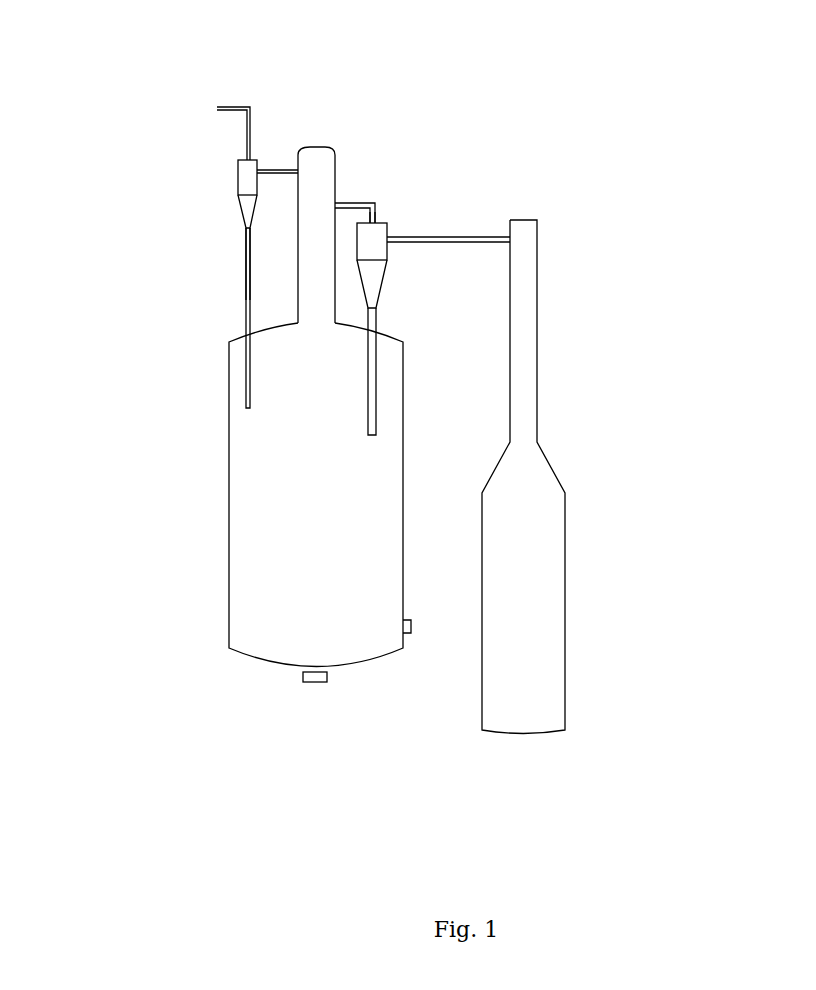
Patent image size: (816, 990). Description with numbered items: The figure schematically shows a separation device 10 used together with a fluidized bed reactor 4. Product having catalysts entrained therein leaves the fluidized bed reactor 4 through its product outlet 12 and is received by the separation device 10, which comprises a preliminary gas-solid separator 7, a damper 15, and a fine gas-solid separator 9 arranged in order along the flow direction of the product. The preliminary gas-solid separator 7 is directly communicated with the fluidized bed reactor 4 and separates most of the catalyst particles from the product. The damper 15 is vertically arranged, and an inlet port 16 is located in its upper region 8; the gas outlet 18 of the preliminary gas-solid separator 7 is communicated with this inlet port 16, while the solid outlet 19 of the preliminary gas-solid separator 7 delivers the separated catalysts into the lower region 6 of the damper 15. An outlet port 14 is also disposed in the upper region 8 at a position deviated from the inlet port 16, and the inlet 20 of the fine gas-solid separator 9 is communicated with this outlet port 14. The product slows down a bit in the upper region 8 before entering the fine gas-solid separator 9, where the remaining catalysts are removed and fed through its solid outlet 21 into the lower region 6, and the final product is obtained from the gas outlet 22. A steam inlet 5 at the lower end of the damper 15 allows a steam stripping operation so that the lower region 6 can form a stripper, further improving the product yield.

The fluidized bed reactor 4 is at (527, 525).
The steam inlet 5 is at (308, 682).
The lower region 6 is at (288, 513).
The preliminary gas-solid separator 7 is at (375, 243).
The upper region 8 is at (322, 182).
The fine gas-solid separator 9 is at (250, 178).
The separation device 10 is at (386, 123).
The product outlet 12 is at (510, 233).
The outlet port 14 is at (297, 152).
The damper 15 is at (212, 602).
The inlet port 16 is at (335, 203).
The gas outlet 18 is at (376, 205).
The solid outlet 19 is at (377, 312).
The inlet 20 is at (248, 228).
The solid outlet 21 is at (248, 227).
The gas outlet 22 is at (248, 137).